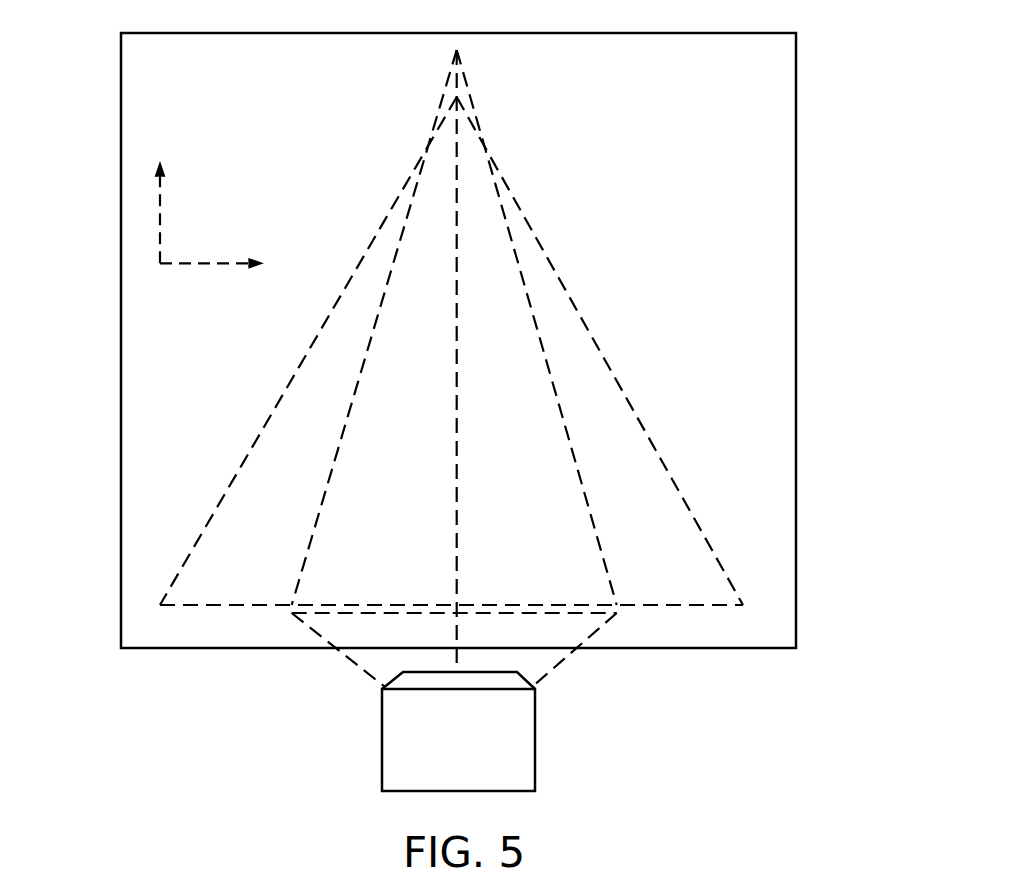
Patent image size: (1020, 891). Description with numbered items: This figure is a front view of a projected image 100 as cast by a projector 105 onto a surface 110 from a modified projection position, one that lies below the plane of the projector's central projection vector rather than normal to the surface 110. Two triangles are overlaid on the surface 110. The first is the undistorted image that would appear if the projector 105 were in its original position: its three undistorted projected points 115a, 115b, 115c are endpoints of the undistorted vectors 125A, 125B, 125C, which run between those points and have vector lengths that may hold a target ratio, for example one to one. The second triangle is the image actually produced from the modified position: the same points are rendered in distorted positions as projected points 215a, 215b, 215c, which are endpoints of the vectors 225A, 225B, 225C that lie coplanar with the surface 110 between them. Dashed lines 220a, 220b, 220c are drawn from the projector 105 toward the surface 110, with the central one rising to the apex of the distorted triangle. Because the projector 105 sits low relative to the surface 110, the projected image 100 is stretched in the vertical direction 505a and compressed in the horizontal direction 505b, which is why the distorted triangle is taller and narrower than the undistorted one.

The projected image 100 is at (420, 340).
The projector 105 is at (458, 731).
The surface 110 is at (120, 350).
The undistorted projected point 115a is at (160, 605).
The undistorted projected point 115b is at (465, 112).
The undistorted projected point 115c is at (743, 605).
The undistorted vector 125A is at (584, 322).
The undistorted vector 125B is at (210, 605).
The undistorted vector 125C is at (329, 318).
The projected point 215a is at (292, 605).
The projected point 215b is at (458, 50).
The projected point 215c is at (617, 605).
The left projection ray 220a is at (368, 670).
The center projection axis 220b is at (456, 438).
The right projection ray 220c is at (548, 667).
The vector 225A is at (580, 480).
The vector 225B is at (497, 612).
The vector 225C is at (318, 525).
The vertical direction 505a is at (160, 210).
The horizontal direction 505b is at (230, 265).